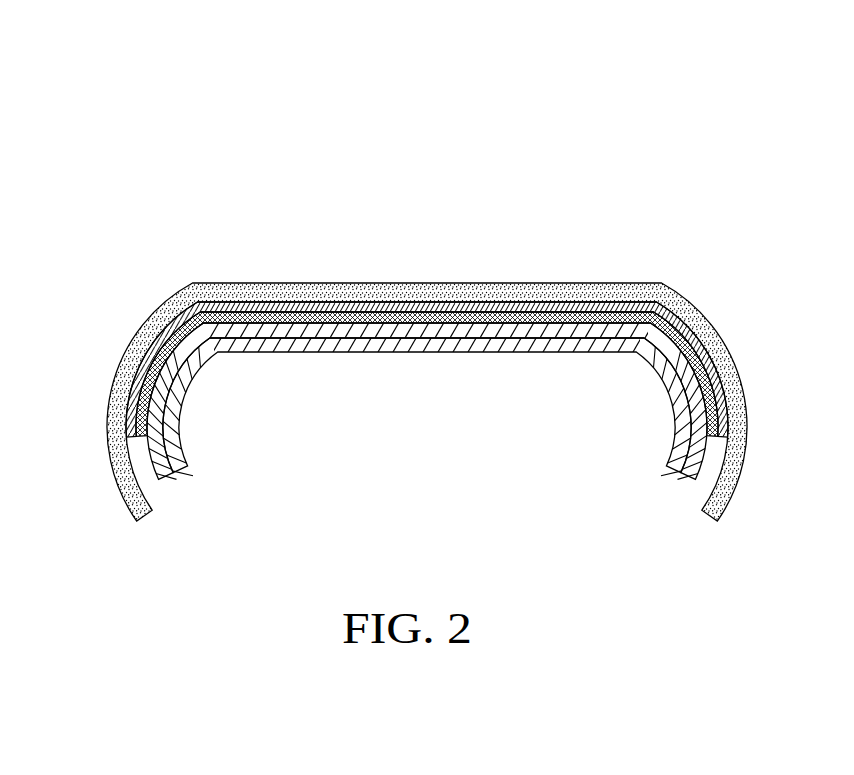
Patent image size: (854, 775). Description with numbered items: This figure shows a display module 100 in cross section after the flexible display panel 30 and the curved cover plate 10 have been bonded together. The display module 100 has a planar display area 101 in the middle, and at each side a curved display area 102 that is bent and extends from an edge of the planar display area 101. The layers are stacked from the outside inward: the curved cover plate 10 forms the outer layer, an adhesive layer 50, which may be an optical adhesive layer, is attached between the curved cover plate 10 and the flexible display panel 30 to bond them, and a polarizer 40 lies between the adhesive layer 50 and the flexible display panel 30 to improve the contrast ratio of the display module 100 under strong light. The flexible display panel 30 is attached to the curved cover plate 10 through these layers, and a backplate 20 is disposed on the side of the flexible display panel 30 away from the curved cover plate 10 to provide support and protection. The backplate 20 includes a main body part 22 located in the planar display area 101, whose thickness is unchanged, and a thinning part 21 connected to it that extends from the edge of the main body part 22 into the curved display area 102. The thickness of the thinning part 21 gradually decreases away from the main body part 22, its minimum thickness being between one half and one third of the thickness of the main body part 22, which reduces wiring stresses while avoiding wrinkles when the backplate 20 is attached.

The display module 100 is at (126, 146).
The curved cover plate 10 is at (326, 292).
The adhesive layer 50 is at (362, 306).
The polarizer 40 is at (391, 317).
The flexible display panel 30 is at (313, 333).
The main body part 22 is at (427, 407).
The backplate 20 is at (427, 401).
The thinning part 21 is at (194, 382).
The planar display area 101 is at (192, 241).
The curved display area 102 is at (747, 432).